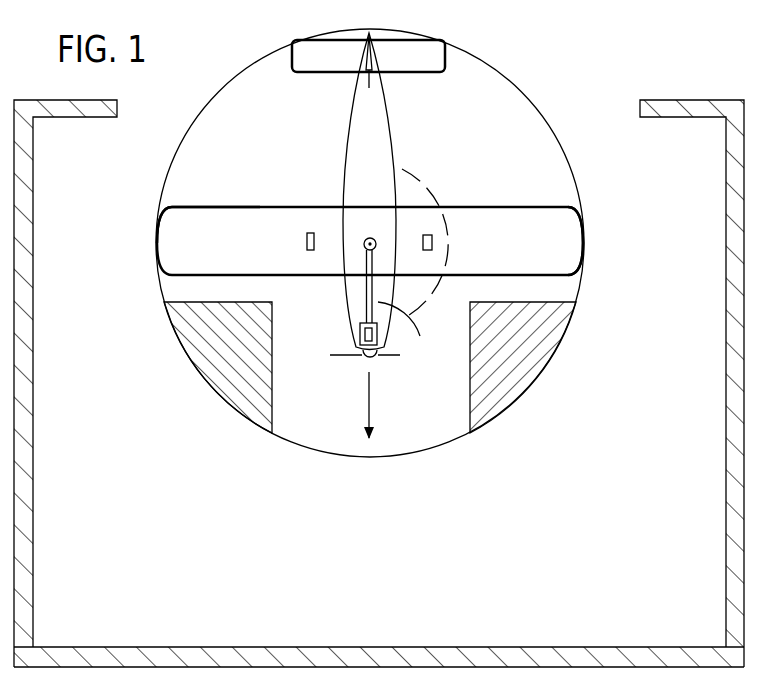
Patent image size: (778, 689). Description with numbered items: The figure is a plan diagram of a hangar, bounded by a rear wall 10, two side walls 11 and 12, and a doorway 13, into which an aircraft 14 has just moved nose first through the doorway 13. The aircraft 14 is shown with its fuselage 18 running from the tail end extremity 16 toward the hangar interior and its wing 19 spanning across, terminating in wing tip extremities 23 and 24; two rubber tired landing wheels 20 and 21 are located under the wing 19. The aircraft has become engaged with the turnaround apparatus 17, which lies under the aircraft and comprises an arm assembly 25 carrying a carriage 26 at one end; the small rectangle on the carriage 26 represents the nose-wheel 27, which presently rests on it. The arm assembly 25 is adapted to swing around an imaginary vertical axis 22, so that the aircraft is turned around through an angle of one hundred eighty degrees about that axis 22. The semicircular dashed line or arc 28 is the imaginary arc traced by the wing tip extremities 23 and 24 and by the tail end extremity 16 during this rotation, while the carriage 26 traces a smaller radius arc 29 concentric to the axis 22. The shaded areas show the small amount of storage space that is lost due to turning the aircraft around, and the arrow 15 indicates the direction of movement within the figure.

The rear wall 10 is at (546, 647).
The side wall 11 is at (33, 532).
The side wall 12 is at (726, 522).
The doorway 13 is at (618, 147).
The aircraft 14 is at (340, 196).
The direction of movement 15 is at (377, 365).
The tail end extremity 16 is at (372, 63).
The turnaround apparatus 17 is at (357, 307).
The fuselage 18 is at (360, 158).
The wing 19 is at (223, 222).
The landing wheel 20 is at (313, 251).
The landing wheel 21 is at (432, 248).
The imaginary vertical axis 22 is at (376, 241).
The wing tip extremity 23 is at (166, 208).
The wing tip extremity 24 is at (583, 231).
The arm assembly 25 is at (413, 329).
The carriage 26 is at (360, 338).
The nose-wheel 27 is at (400, 355).
The semicircular dashed line or arc 28 is at (562, 142).
The smaller radius arc 29 is at (402, 176).